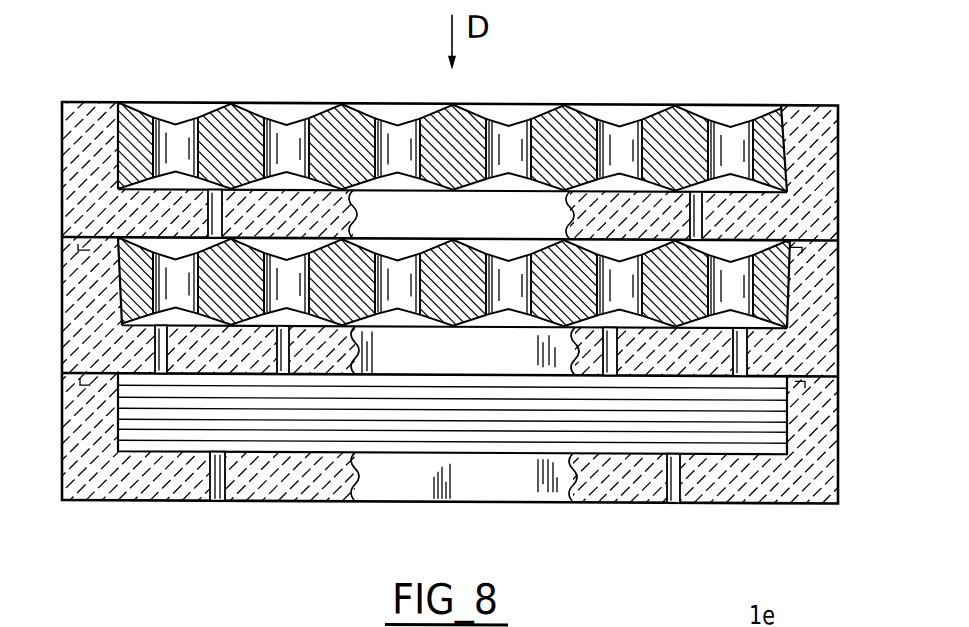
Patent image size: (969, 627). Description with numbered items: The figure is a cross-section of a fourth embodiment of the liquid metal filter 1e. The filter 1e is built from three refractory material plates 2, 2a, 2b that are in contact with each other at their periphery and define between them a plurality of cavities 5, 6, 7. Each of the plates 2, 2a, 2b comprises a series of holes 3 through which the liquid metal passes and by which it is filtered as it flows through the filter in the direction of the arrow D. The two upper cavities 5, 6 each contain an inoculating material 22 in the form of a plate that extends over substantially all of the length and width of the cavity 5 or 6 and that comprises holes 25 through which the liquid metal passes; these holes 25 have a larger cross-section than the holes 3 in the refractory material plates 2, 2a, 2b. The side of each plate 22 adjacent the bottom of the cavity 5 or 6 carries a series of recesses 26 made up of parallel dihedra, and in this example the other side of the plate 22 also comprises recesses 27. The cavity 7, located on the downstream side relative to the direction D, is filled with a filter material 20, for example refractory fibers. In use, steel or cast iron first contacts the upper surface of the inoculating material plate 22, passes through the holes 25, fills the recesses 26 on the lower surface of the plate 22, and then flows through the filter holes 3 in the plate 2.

The filter 1e is at (683, 89).
The refractory material plate 2 is at (773, 205).
The refractory material plate 2a is at (777, 345).
The refractory material plate 2b is at (790, 482).
The hole 3 is at (720, 196).
The cavity 5 is at (188, 172).
The cavity 6 is at (170, 317).
The cavity 7 is at (167, 450).
The filter material 20 is at (547, 429).
The inoculating material 22 is at (341, 115).
The hole 25 is at (196, 121).
The recess 26 is at (167, 173).
The recess 27 is at (259, 117).